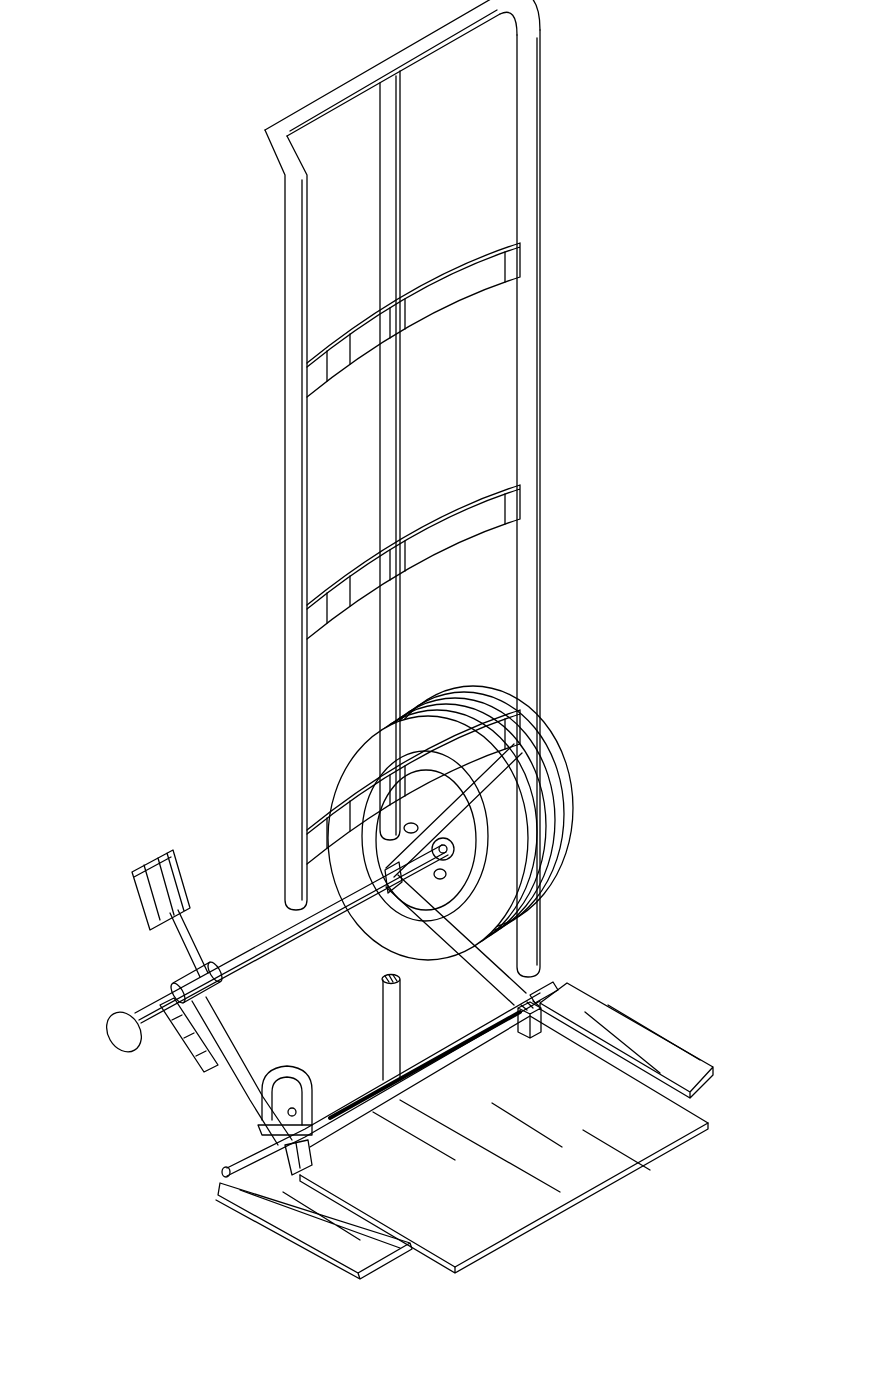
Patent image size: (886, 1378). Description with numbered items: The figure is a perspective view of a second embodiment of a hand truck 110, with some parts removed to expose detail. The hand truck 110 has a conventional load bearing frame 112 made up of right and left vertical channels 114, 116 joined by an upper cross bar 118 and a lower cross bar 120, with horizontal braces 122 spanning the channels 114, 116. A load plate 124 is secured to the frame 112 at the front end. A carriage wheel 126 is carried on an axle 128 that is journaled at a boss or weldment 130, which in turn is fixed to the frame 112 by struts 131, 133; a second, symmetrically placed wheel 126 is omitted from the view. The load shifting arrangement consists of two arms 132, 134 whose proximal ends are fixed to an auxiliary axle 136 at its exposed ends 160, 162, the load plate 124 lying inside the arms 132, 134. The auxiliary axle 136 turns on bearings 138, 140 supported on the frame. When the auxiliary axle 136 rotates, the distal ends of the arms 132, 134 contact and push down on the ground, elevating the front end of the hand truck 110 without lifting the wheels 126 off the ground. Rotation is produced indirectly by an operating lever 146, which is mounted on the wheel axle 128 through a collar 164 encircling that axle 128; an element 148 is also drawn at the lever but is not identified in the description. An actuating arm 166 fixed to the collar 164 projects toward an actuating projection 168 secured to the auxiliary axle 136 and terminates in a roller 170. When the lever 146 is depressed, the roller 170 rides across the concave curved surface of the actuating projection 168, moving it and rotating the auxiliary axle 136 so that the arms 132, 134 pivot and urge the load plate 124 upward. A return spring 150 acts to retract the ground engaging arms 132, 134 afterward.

The hand truck 110 is at (150, 62).
The load bearing frame 112 is at (615, 60).
The right vertical channel 114 is at (285, 378).
The left vertical channel 116 is at (541, 258).
The upper cross bar 118 is at (388, 78).
The lower cross bar 120 is at (508, 1022).
The horizontal braces 122 is at (432, 293).
The load plate 124 is at (490, 1207).
The carriage wheel 126 is at (557, 818).
The axle 128 is at (268, 942).
The weldment 130 is at (372, 830).
The strut 131 is at (493, 848).
The strut 133 is at (398, 926).
The arm 132 is at (648, 1040).
The arm 134 is at (288, 1217).
The auxiliary axle 136 is at (430, 1052).
The bearing 138 is at (510, 1003).
The bearing 140 is at (270, 1127).
The operating lever 146 is at (187, 937).
The pedal 148 is at (185, 863).
The return spring 150 is at (263, 1100).
The exposed end 160 is at (550, 980).
The exposed end 162 is at (227, 1163).
The collar 164 is at (223, 988).
The actuating arm 166 is at (223, 1021).
The actuating projection 168 is at (287, 1063).
The roller 170 is at (297, 1110).